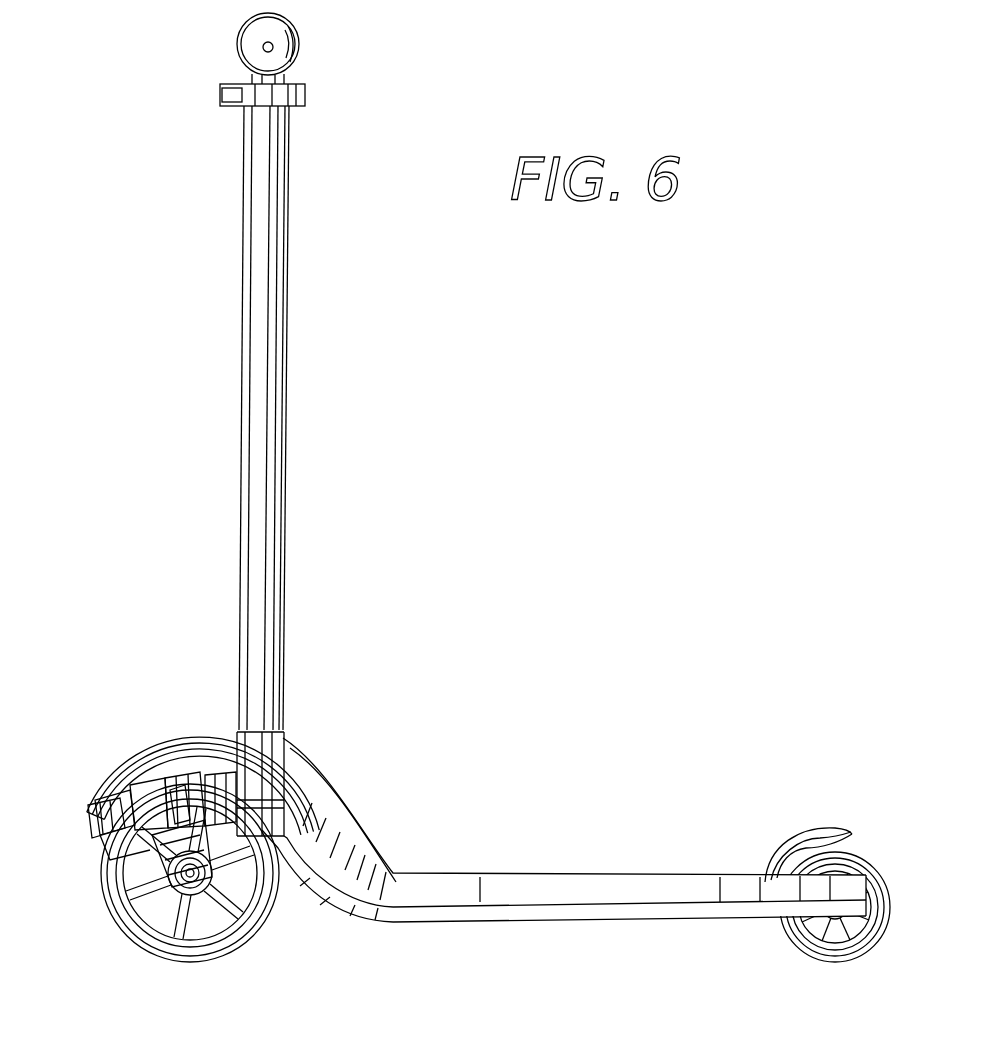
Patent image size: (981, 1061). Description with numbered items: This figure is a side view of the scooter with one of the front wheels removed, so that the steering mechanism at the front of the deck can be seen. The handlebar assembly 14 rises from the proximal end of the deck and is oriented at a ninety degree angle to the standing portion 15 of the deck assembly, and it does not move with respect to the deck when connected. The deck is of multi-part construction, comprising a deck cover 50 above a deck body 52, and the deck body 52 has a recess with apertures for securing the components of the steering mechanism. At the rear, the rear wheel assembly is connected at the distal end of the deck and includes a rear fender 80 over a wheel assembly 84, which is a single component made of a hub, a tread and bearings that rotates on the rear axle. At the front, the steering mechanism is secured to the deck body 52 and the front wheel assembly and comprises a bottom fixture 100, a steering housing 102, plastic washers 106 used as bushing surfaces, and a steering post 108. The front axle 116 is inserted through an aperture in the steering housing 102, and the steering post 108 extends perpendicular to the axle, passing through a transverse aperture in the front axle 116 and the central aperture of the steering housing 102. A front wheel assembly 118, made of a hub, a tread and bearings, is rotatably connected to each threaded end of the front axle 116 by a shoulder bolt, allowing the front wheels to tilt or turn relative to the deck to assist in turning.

The handlebar assembly 14 is at (288, 270).
The standing portion 15 is at (510, 874).
The deck cover 50 is at (425, 873).
The deck body 52 is at (475, 900).
The rear fender 80 is at (800, 838).
The wheel assembly 84 is at (858, 958).
The bottom fixture 100 is at (120, 812).
The steering housing 102 is at (233, 927).
The plastic washers 106 is at (97, 822).
The steering post 108 is at (180, 778).
The front axle 116 is at (125, 888).
The front wheel assembly 118 is at (148, 942).